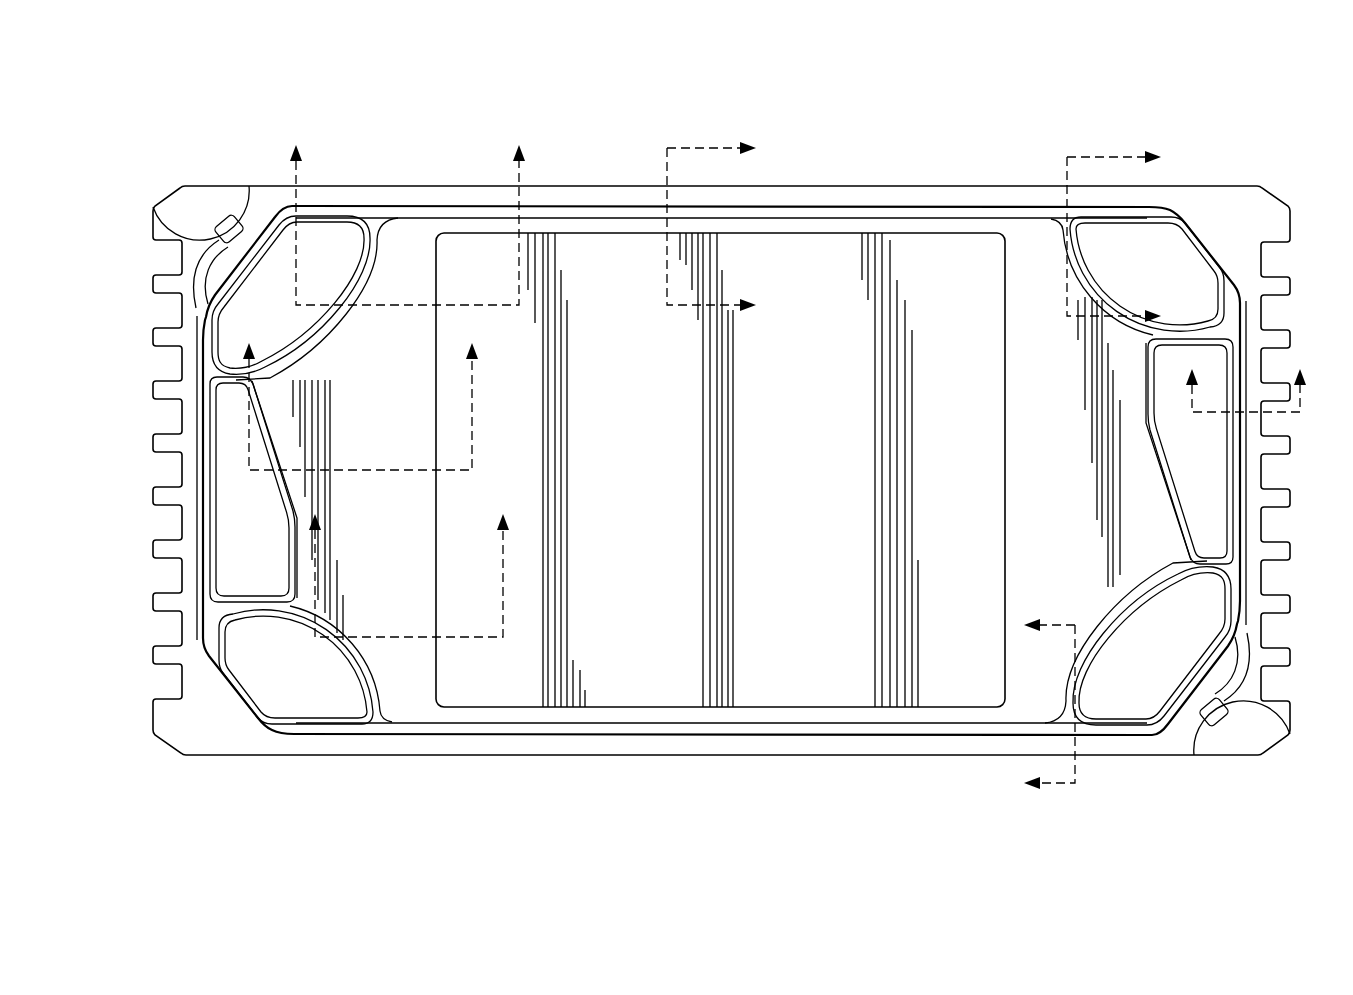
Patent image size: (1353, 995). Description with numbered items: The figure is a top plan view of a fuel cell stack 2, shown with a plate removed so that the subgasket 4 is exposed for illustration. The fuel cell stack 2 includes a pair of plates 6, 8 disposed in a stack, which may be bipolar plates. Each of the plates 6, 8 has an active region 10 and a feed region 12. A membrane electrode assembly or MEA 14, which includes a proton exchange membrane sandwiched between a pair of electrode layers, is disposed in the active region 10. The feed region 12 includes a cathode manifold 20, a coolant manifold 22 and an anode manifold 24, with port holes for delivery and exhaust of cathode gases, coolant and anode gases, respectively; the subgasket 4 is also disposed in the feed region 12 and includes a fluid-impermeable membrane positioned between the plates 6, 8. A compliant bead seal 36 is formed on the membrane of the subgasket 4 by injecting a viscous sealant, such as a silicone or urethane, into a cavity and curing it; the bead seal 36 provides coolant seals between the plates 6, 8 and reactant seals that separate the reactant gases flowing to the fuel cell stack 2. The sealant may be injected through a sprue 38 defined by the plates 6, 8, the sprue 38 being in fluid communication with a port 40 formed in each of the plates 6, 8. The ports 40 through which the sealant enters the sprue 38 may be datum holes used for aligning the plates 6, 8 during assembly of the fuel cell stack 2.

The fuel cell stack 2 is at (1068, 138).
The subgasket 4 is at (350, 412).
The plate 6 is at (232, 186).
The plate 8 is at (707, 402).
The active region 10 is at (790, 272).
The feed region 12 is at (1132, 505).
The membrane electrode assembly 14 is at (930, 283).
The cathode manifold 20 is at (343, 240).
The coolant manifold 22 is at (1210, 357).
The anode manifold 24 is at (1134, 240).
The bead seal 36 is at (597, 208).
The sprue 38 is at (152, 206).
The port 40 is at (248, 210).